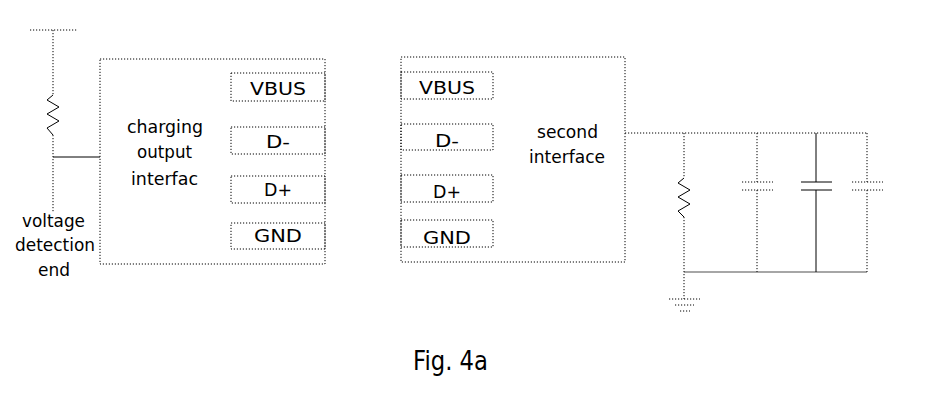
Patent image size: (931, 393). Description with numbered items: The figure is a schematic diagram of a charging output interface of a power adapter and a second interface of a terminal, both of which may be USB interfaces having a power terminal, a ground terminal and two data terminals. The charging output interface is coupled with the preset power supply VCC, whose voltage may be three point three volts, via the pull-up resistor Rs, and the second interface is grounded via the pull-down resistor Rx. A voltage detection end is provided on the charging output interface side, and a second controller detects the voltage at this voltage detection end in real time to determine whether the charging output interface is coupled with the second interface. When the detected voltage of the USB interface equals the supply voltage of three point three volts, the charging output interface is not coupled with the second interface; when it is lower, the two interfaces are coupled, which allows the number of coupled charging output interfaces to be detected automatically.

The preset power supply VCC is at (53, 52).
The pull-up resistor Rs is at (39, 153).
The pull-down resistor Rx is at (667, 216).